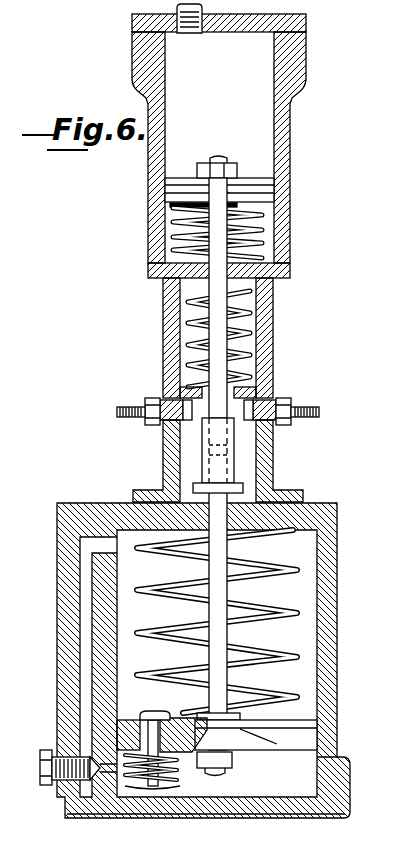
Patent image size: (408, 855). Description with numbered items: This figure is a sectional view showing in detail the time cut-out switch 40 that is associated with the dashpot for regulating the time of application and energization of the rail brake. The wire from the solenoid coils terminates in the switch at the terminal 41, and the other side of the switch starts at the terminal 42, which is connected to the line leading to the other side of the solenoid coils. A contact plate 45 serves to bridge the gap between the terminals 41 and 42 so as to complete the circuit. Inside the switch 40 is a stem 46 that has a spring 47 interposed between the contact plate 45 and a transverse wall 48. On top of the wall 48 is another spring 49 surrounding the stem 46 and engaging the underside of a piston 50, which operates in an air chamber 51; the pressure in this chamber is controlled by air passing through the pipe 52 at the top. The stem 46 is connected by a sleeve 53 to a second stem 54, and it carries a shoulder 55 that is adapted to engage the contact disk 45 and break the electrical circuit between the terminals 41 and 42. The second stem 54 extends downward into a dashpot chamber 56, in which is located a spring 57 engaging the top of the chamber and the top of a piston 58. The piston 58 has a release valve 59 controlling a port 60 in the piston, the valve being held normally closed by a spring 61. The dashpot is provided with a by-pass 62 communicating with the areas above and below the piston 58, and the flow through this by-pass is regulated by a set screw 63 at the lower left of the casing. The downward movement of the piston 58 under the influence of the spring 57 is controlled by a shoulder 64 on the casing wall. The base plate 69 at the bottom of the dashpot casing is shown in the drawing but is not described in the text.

The electric cut-out switch 40 is at (158, 357).
The terminal 41 is at (265, 430).
The terminal 42 is at (172, 430).
The plate 45 is at (262, 393).
The stem 46 is at (218, 373).
The spring 47 is at (265, 333).
The transverse wall 48 is at (268, 288).
The spring 49 is at (262, 245).
The piston 50 is at (262, 190).
The air chamber 51 is at (255, 140).
The pipe 52 is at (190, 30).
The sleeve 53 is at (205, 470).
The second stem 54 is at (222, 550).
The shoulder 55 is at (245, 488).
The dashpot chamber 56 is at (307, 583).
The spring 57 is at (297, 616).
The piston 58 is at (305, 737).
The release valve 59 is at (151, 711).
The port 60 is at (168, 719).
The spring 61 is at (167, 788).
The by-pass 62 is at (83, 588).
The set screw 63 is at (63, 788).
The shoulder 64 is at (335, 757).
The base plate 69 is at (206, 826).